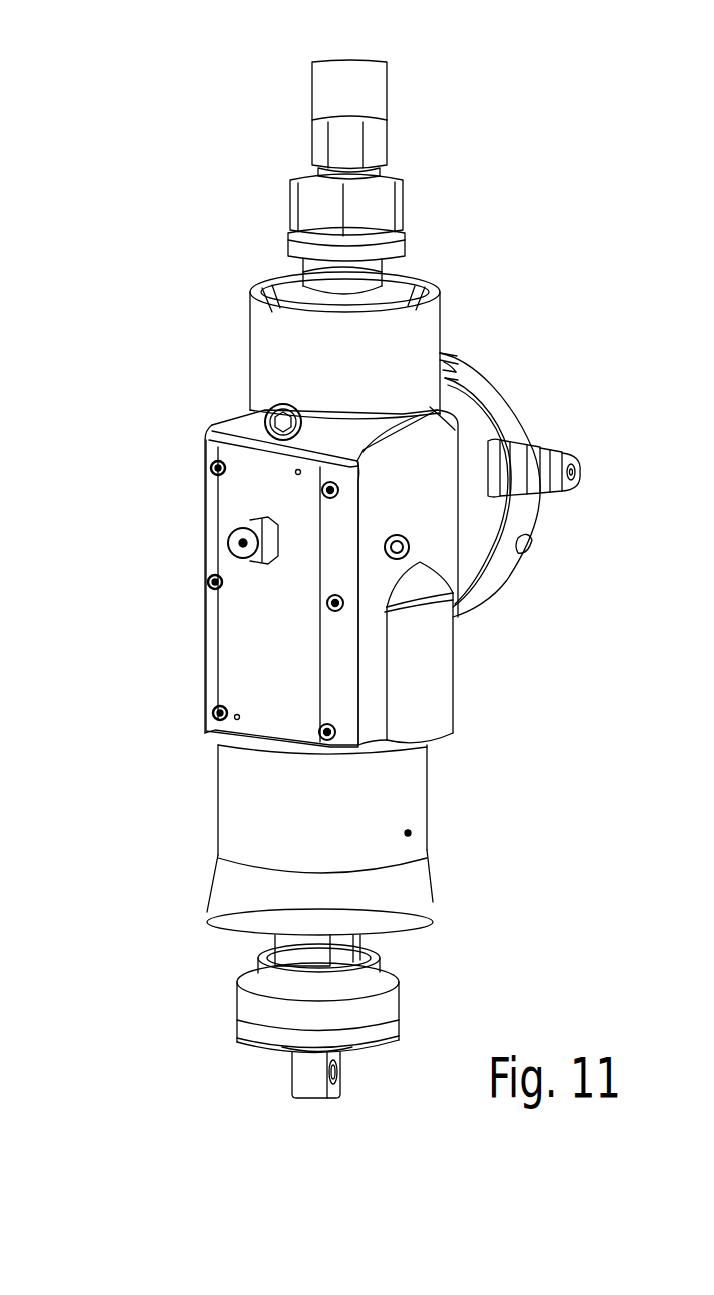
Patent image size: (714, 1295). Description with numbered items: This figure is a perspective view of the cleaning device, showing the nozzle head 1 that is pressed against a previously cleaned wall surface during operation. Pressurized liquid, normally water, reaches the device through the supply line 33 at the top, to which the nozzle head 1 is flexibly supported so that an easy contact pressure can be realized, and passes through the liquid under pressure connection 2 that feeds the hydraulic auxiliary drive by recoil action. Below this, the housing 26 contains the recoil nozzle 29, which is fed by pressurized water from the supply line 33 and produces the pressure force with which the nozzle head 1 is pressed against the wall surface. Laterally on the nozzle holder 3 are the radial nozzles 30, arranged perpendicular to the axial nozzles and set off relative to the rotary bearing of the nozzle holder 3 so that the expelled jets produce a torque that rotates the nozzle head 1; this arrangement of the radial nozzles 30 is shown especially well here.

The nozzle head 1 is at (462, 623).
The liquid under pressure connection 2 is at (370, 215).
The nozzle holder 3 is at (497, 407).
The housing 26 is at (273, 622).
The recoil nozzle 29 is at (240, 543).
The radial nozzles 30 is at (547, 494).
The supply line 33 is at (345, 102).